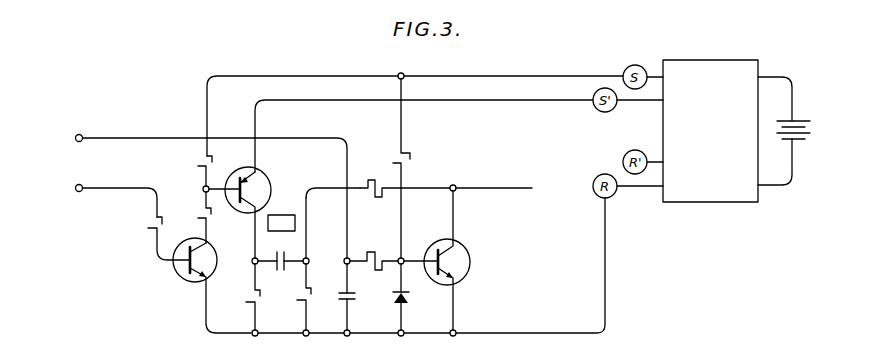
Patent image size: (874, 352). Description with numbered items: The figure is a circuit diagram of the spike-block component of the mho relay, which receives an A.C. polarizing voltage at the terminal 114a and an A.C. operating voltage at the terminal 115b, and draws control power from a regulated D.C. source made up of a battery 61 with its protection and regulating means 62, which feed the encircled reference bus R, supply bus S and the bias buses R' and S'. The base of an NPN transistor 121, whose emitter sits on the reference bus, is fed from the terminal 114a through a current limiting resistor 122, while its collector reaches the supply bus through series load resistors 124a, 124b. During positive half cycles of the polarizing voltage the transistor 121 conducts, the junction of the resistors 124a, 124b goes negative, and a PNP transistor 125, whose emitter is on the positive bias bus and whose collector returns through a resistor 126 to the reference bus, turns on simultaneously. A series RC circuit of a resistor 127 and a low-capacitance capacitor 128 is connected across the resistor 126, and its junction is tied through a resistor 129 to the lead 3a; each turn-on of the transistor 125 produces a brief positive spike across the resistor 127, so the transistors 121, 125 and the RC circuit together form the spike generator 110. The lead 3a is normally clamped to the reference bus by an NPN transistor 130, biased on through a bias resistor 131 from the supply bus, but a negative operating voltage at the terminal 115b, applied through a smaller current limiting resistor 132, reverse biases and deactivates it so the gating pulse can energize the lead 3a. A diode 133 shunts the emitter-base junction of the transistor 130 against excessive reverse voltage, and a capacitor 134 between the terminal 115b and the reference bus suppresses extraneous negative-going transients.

The terminal 115b is at (79, 135).
The terminal 114a is at (77, 191).
The current limiting resistor 122 is at (148, 229).
The resistor 124a is at (198, 217).
The resistor 124b is at (198, 166).
The NPN transistor 121 is at (180, 283).
The PNP transistor 125 is at (268, 176).
The spike generator 110 is at (282, 223).
The resistor 126 is at (246, 302).
The resistor 127 is at (311, 292).
The capacitor 128 is at (282, 272).
The resistor 129 is at (373, 179).
The bias resistor 131 is at (412, 157).
The current limiting resistor 132 is at (373, 251).
The diode 133 is at (411, 296).
The capacitor 134 is at (356, 298).
The NPN transistor 130 is at (471, 262).
The lead 3a is at (503, 187).
The battery 61 is at (800, 121).
The protection and regulating means 62 is at (733, 197).